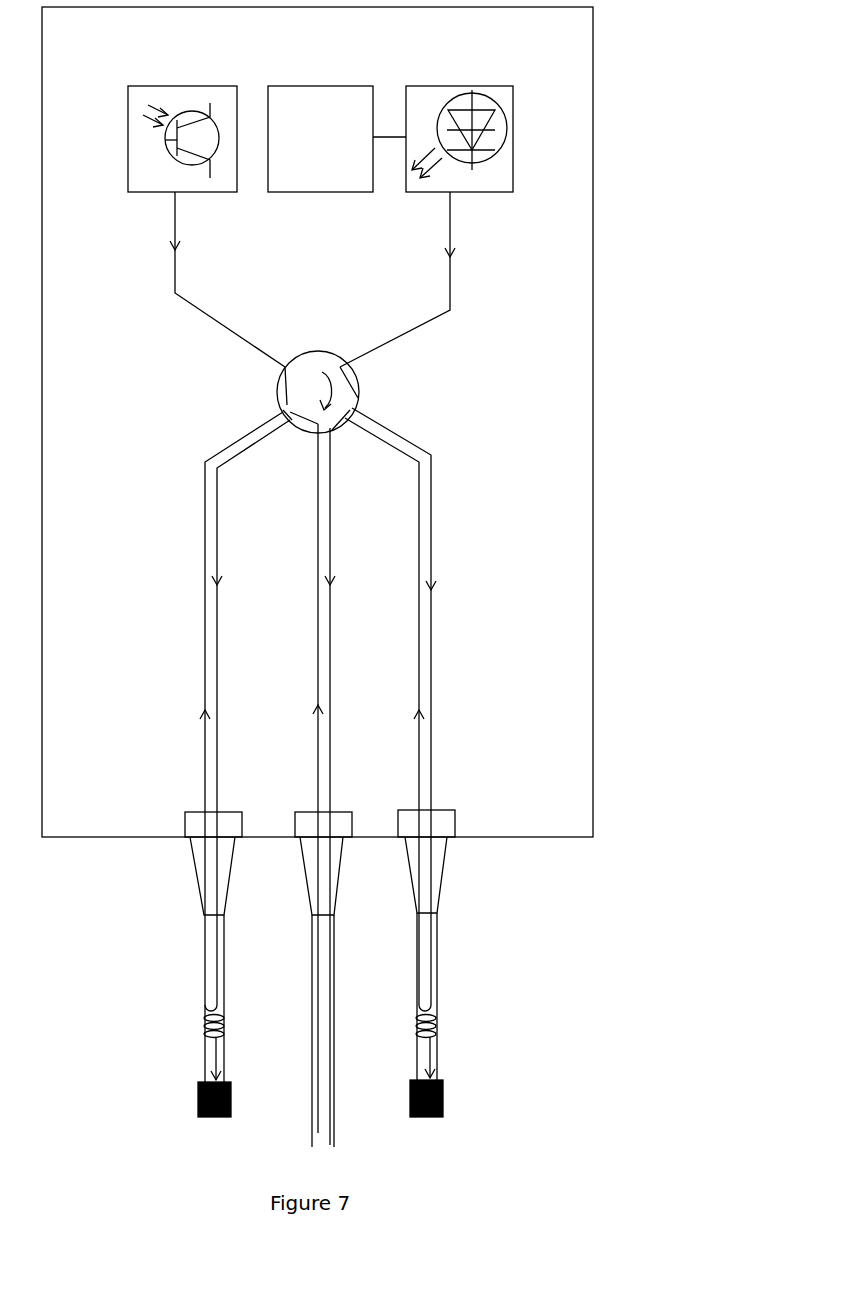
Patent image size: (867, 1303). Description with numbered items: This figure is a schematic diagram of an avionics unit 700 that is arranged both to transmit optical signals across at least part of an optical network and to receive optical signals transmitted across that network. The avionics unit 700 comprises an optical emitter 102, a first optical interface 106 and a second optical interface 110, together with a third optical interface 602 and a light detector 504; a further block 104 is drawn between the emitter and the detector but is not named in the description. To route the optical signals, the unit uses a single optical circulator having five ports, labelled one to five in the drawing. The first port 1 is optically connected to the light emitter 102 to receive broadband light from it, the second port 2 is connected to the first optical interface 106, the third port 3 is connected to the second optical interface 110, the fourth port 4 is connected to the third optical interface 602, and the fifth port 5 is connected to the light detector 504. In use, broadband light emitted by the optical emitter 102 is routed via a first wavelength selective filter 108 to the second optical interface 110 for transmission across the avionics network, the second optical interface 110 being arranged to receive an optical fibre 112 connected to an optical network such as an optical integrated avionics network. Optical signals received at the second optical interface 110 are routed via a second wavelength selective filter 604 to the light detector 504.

The avionics unit 700 is at (593, 78).
The light detector 504 is at (168, 86).
The controller 104 is at (340, 86).
The optical emitter 102 is at (433, 88).
The first port 1 is at (350, 365).
The second port 2 is at (350, 430).
The third port 3 is at (304, 436).
The fourth port 4 is at (274, 406).
The fifth port 5 is at (279, 369).
The third optical interface 602 is at (193, 823).
The second optical interface 110 is at (340, 812).
The first optical interface 106 is at (452, 812).
The second wavelength selective filter 604 is at (200, 1032).
The first wavelength selective filter 108 is at (440, 1025).
The optical fibre 112 is at (313, 1078).